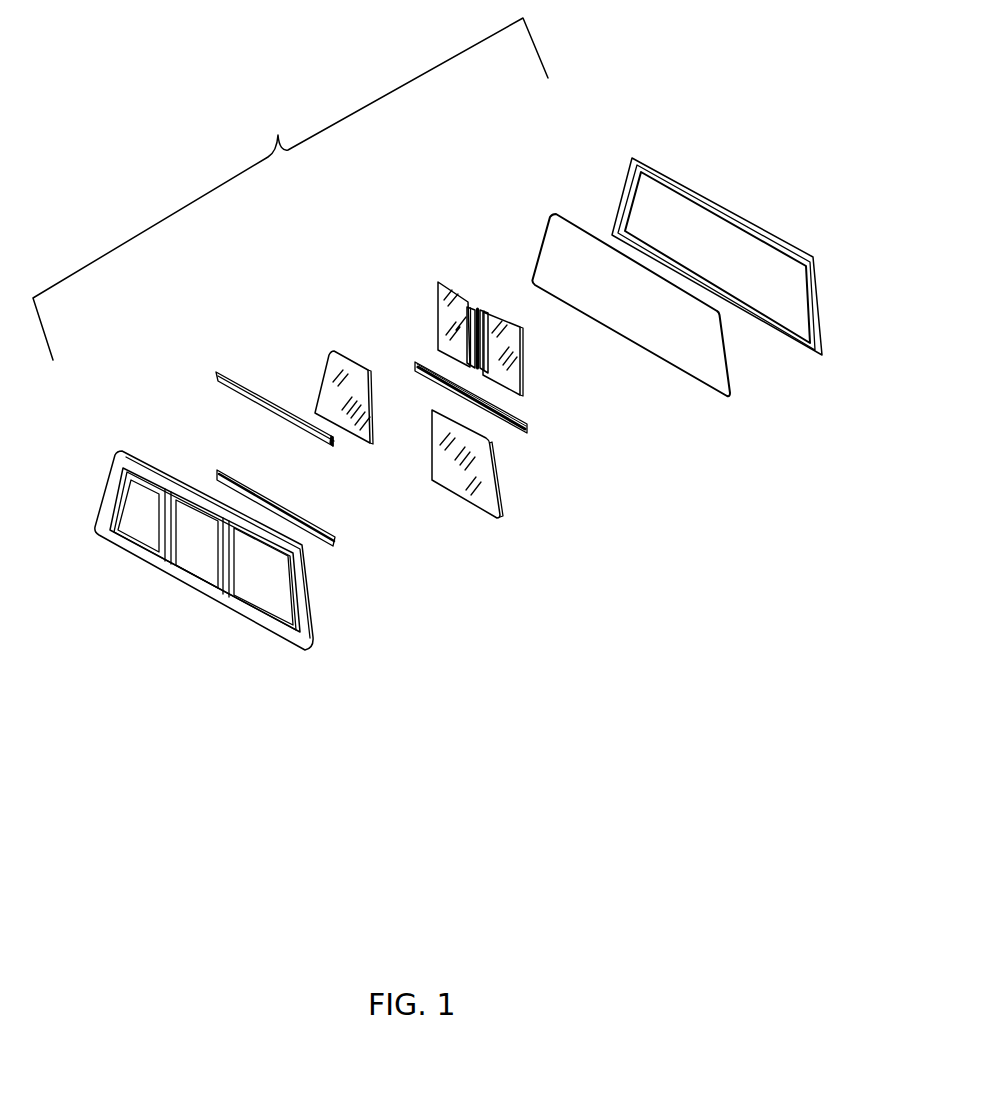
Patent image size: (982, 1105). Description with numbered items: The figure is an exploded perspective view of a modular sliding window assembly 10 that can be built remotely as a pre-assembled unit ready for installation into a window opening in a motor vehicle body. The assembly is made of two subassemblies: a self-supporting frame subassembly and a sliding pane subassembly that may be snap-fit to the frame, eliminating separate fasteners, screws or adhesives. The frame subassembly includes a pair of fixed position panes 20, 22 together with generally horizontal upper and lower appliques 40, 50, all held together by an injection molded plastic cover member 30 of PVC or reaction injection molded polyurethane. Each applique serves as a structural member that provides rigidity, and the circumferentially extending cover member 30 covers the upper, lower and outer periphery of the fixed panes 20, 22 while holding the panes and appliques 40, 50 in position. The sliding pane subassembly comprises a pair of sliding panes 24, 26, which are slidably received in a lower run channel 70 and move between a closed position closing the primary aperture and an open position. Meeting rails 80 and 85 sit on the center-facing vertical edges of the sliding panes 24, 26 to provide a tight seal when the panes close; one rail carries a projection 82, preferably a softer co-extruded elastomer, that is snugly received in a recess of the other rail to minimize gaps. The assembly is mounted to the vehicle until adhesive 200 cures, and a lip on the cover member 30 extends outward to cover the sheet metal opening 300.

The sliding window assembly 10 is at (290, 189).
The fixed position pane 20 is at (332, 368).
The fixed position pane 22 is at (487, 507).
The sliding pane 24 is at (433, 287).
The sliding pane 26 is at (515, 370).
The plastic cover member 30 is at (302, 638).
The upper applique 40 is at (220, 373).
The lower applique 50 is at (216, 472).
The lower run channel 70 is at (530, 435).
The meeting rail 80 is at (470, 307).
The projection 82 is at (476, 305).
The meeting rail 85 is at (485, 305).
The adhesive 200 is at (560, 217).
The sheet metal opening 300 is at (680, 185).